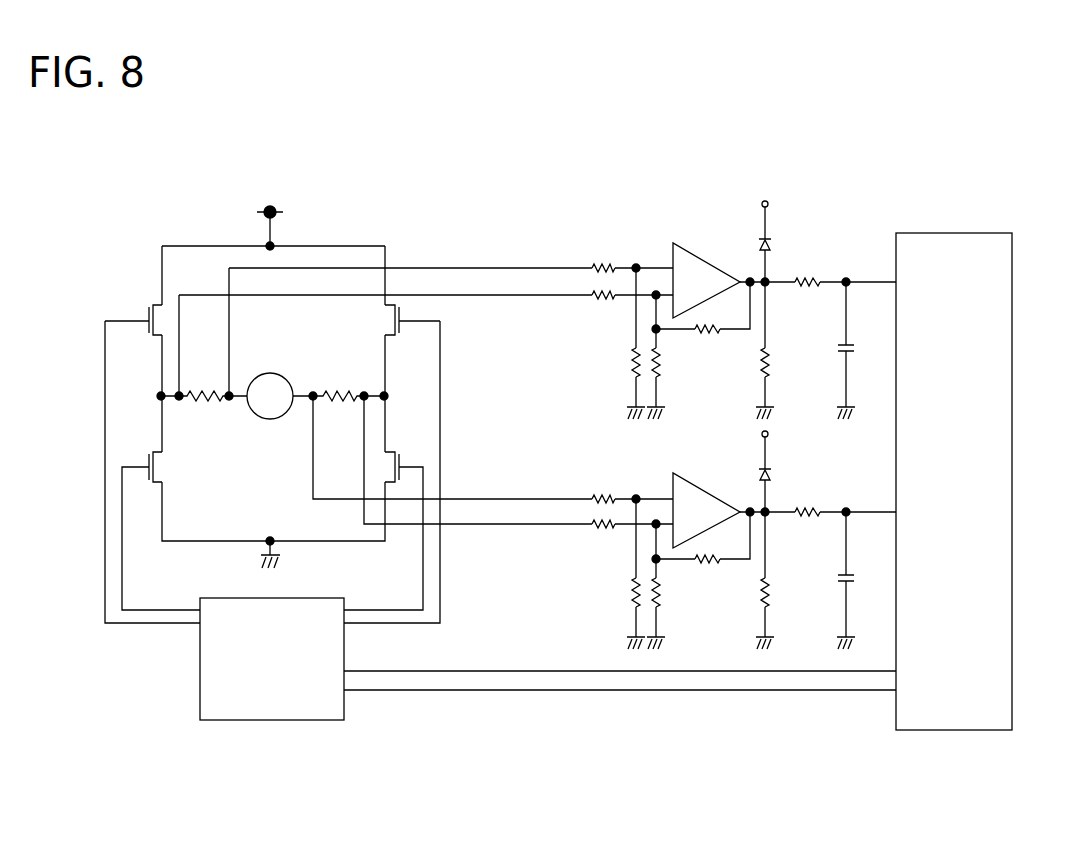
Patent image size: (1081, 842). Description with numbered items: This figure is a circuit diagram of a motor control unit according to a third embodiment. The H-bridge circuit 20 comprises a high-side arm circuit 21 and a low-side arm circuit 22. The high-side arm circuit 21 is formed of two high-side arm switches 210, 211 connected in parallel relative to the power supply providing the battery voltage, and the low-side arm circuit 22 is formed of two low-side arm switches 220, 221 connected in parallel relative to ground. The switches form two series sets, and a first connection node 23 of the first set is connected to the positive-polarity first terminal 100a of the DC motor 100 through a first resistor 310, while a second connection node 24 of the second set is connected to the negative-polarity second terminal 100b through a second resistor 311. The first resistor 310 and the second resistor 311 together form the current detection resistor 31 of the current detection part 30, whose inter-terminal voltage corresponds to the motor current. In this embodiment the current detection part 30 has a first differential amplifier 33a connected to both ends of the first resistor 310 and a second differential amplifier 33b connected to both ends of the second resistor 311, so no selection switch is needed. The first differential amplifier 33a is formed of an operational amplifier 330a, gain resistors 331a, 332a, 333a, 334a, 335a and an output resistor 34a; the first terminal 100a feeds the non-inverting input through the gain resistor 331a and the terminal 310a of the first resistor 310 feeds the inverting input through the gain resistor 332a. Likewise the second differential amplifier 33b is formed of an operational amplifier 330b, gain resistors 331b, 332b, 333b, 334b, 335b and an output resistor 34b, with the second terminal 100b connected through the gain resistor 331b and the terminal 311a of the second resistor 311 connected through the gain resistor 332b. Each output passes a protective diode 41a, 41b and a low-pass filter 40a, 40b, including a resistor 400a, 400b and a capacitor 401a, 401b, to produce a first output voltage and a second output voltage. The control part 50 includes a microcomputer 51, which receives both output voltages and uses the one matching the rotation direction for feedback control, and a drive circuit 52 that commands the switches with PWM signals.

The H-bridge circuit 20 is at (150, 243).
The high-side arm circuit 21 is at (396, 243).
The low-side arm circuit 22 is at (157, 548).
The first connection node 23 is at (161, 396).
The second connection node 24 is at (386, 396).
The high-side arm switch 210 is at (149, 308).
The high-side arm switch 211 is at (399, 328).
The low-side arm switch 220 is at (150, 467).
The low-side arm switch 221 is at (399, 465).
The current detection part 30 is at (652, 210).
The current detection resistor 31 is at (200, 315).
The first resistor 310 is at (205, 400).
The terminal 310a is at (180, 401).
The second resistor 311 is at (338, 391).
The terminal 311a is at (364, 392).
The DC motor 100 is at (266, 373).
The first terminal 100a is at (230, 401).
The second terminal 100b is at (313, 392).
The first differential amplifier 33a is at (692, 289).
The second differential amplifier 33b is at (691, 526).
The operational amplifier 330a is at (704, 262).
The operational amplifier 330b is at (718, 476).
The gain resistor 331a is at (604, 263).
The gain resistor 331b is at (604, 494).
The gain resistor 332a is at (605, 299).
The gain resistor 332b is at (605, 529).
The gain resistor 333a is at (632, 362).
The gain resistor 333b is at (632, 592).
The gain resistor 334a is at (658, 362).
The gain resistor 334b is at (658, 592).
The gain resistor 335a is at (710, 332).
The gain resistor 335b is at (710, 562).
The output resistor 34a is at (770, 358).
The output resistor 34b is at (770, 588).
The protective diode 41a is at (770, 245).
The protective diode 41b is at (770, 475).
The low-pass filter 40a is at (835, 303).
The low-pass filter 40b is at (842, 538).
The resistor 400a is at (808, 286).
The resistor 400b is at (808, 516).
The capacitor 401a is at (851, 346).
The capacitor 401b is at (851, 576).
The control part 50 is at (971, 447).
The microcomputer 51 is at (1012, 233).
The drive circuit 52 is at (344, 710).